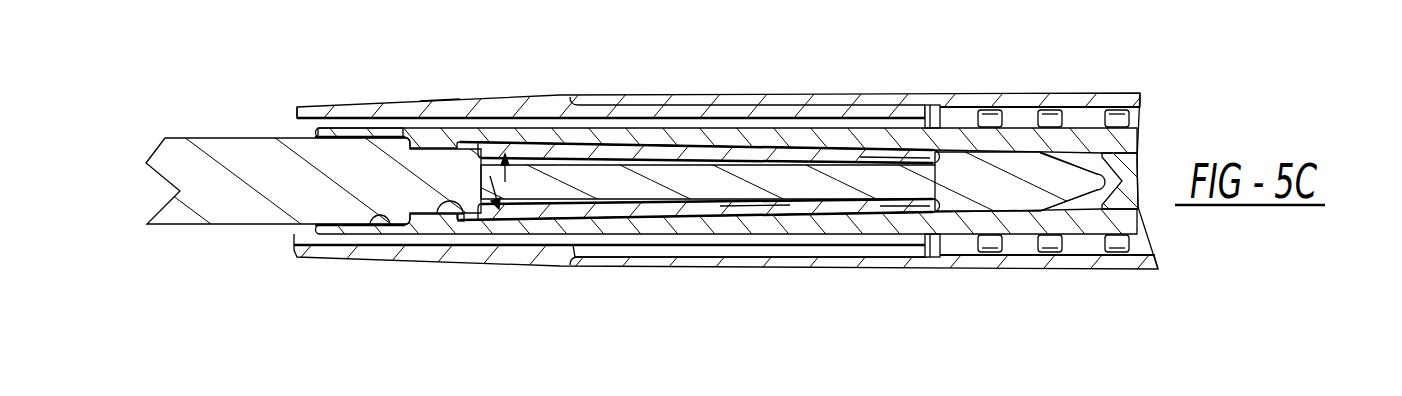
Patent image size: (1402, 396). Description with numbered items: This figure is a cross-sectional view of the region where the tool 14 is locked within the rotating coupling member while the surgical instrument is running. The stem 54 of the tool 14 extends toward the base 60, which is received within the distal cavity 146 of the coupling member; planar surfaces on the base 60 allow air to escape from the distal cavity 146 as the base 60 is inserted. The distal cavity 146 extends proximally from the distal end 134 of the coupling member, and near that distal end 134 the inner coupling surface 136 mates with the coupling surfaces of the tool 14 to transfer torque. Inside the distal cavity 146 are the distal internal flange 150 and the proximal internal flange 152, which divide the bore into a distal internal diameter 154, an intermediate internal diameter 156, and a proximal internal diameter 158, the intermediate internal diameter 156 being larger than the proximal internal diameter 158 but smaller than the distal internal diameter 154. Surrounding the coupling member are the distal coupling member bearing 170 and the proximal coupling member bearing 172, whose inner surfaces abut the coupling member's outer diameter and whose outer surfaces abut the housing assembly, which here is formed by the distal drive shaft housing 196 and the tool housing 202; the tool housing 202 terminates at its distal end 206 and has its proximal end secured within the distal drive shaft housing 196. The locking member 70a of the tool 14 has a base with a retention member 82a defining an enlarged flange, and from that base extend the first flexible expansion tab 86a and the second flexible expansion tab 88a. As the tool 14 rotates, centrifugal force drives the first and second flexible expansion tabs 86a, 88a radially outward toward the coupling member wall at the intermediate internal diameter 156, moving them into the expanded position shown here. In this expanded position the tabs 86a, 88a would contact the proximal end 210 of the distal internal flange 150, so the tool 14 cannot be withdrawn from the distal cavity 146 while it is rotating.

The tool 14 is at (198, 160).
The distal end 134 is at (292, 134).
The distal end 206 is at (297, 117).
The inner coupling surface 136 is at (373, 135).
The tool housing 202 is at (400, 97).
The distal internal flange 150 is at (437, 103).
The first flexible expansion tab 86a is at (550, 150).
The locking member 70a is at (660, 147).
The proximal internal flange 152 is at (880, 155).
The distal drive shaft housing 196 is at (907, 97).
The distal coupling member bearing 170 is at (967, 117).
The distal cavity 146 is at (1077, 157).
The proximal coupling member bearing 172 is at (1113, 118).
The distal internal diameter 154 is at (378, 218).
The proximal end 210 is at (437, 207).
The second flexible expansion tab 88a is at (600, 213).
The intermediate internal diameter 156 is at (755, 215).
The stem 54 is at (790, 180).
The retention member 82a is at (917, 207).
The base 60 is at (993, 187).
The proximal internal diameter 158 is at (1083, 200).